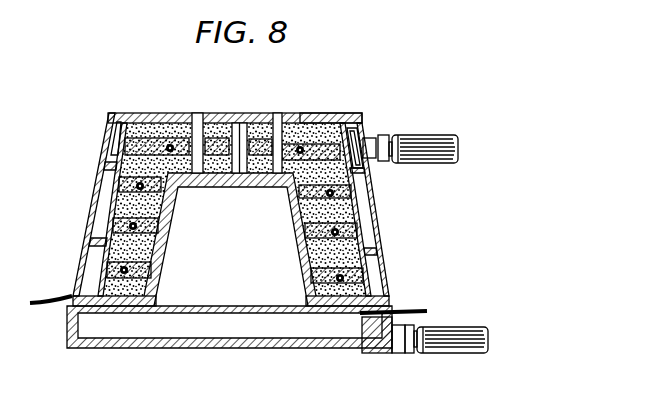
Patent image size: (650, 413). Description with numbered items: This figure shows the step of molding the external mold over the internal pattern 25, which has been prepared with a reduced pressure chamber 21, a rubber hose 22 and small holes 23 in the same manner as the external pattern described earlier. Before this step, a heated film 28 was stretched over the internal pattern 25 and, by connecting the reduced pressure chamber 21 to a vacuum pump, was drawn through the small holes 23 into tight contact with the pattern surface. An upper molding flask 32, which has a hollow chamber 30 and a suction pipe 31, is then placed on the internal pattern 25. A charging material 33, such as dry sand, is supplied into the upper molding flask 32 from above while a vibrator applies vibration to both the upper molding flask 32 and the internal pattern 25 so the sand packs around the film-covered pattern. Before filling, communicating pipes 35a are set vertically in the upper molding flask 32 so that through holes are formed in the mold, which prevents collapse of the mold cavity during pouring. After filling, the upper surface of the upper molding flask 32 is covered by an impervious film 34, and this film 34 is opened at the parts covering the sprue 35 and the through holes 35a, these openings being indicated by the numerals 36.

The reduced pressure chamber 21 is at (275, 303).
The rubber hose 22 is at (457, 330).
The small holes 23 is at (118, 310).
The internal pattern 25 is at (225, 346).
The film 28 is at (410, 311).
The hollow chamber 30 is at (364, 127).
The suction pipe 31 is at (322, 120).
The upper molding flask 32 is at (388, 217).
The charging material 33 is at (148, 112).
The impervious film 34 is at (166, 122).
The sprue 35 is at (243, 128).
The communicating pipes 35a is at (170, 151).
The openings in film 36 is at (283, 107).